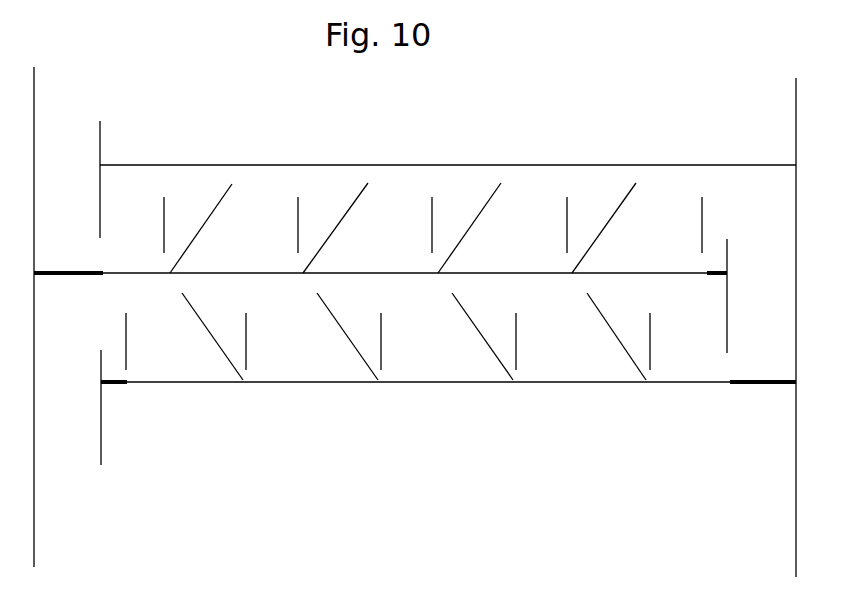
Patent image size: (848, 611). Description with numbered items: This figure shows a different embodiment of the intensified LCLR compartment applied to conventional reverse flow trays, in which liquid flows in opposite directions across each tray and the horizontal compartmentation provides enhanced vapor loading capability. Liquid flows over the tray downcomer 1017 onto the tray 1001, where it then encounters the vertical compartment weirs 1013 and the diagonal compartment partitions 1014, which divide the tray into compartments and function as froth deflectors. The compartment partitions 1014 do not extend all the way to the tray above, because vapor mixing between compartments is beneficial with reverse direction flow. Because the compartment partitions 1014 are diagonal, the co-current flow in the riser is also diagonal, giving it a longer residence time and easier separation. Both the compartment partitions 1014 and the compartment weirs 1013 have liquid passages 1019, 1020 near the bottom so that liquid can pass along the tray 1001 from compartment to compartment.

The tray 1001 is at (408, 382).
The vertical compartment weirs 1013 is at (517, 333).
The diagonal compartment partitions 1014 is at (472, 320).
The tray downcomer 1017 is at (729, 253).
The liquid passage 1019 is at (298, 260).
The liquid passage 1020 is at (325, 267).